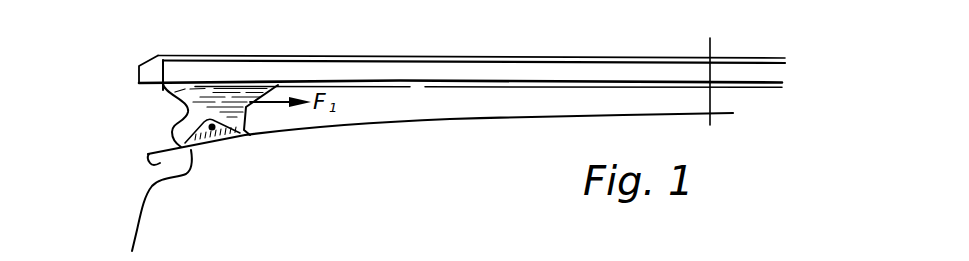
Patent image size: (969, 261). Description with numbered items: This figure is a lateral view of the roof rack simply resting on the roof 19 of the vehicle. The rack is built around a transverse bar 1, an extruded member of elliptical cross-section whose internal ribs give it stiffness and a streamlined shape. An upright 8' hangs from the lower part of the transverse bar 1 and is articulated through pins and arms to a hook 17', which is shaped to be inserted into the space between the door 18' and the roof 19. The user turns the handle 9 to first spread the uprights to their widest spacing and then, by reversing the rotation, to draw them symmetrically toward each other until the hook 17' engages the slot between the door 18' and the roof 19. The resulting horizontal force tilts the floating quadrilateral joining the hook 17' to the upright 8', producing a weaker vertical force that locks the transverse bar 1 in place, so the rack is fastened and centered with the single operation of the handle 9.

The transverse bar 1 is at (442, 75).
The handle 9 is at (147, 73).
The upright 8' is at (182, 115).
The hook 17' is at (108, 163).
The door 18' is at (118, 200).
The roof 19 is at (350, 128).